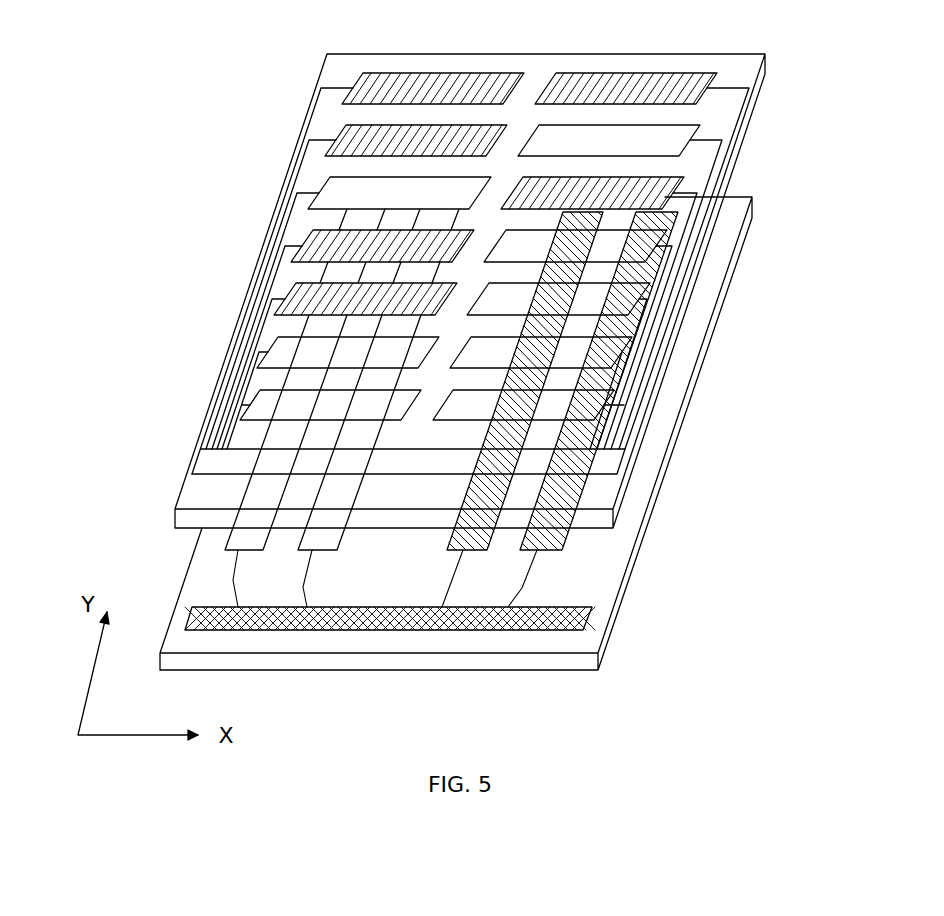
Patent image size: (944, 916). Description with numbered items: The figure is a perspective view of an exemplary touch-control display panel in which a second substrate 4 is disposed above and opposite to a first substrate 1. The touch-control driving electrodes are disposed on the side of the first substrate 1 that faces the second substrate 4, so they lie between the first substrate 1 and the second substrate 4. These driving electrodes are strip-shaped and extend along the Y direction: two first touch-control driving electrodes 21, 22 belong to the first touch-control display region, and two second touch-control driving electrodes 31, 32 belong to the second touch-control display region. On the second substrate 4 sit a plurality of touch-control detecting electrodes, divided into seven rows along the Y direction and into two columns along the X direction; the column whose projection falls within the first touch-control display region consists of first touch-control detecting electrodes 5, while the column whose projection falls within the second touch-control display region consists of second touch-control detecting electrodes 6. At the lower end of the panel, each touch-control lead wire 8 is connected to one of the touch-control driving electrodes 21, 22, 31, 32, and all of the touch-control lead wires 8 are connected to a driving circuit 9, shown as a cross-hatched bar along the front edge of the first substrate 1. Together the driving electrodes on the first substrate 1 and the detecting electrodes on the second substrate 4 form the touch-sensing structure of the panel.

The first substrate 1 is at (663, 442).
The second substrate 4 is at (745, 85).
The first touch-control detecting electrode 5 is at (423, 88).
The second touch-control detecting electrode 6 is at (633, 72).
The touch-control lead wire 8 is at (520, 592).
The driving circuit 9 is at (583, 630).
The first touch-control driving electrode 21 is at (245, 540).
The first touch-control driving electrode 22 is at (325, 538).
The second touch-control driving electrode 31 is at (468, 540).
The second touch-control driving electrode 32 is at (547, 540).